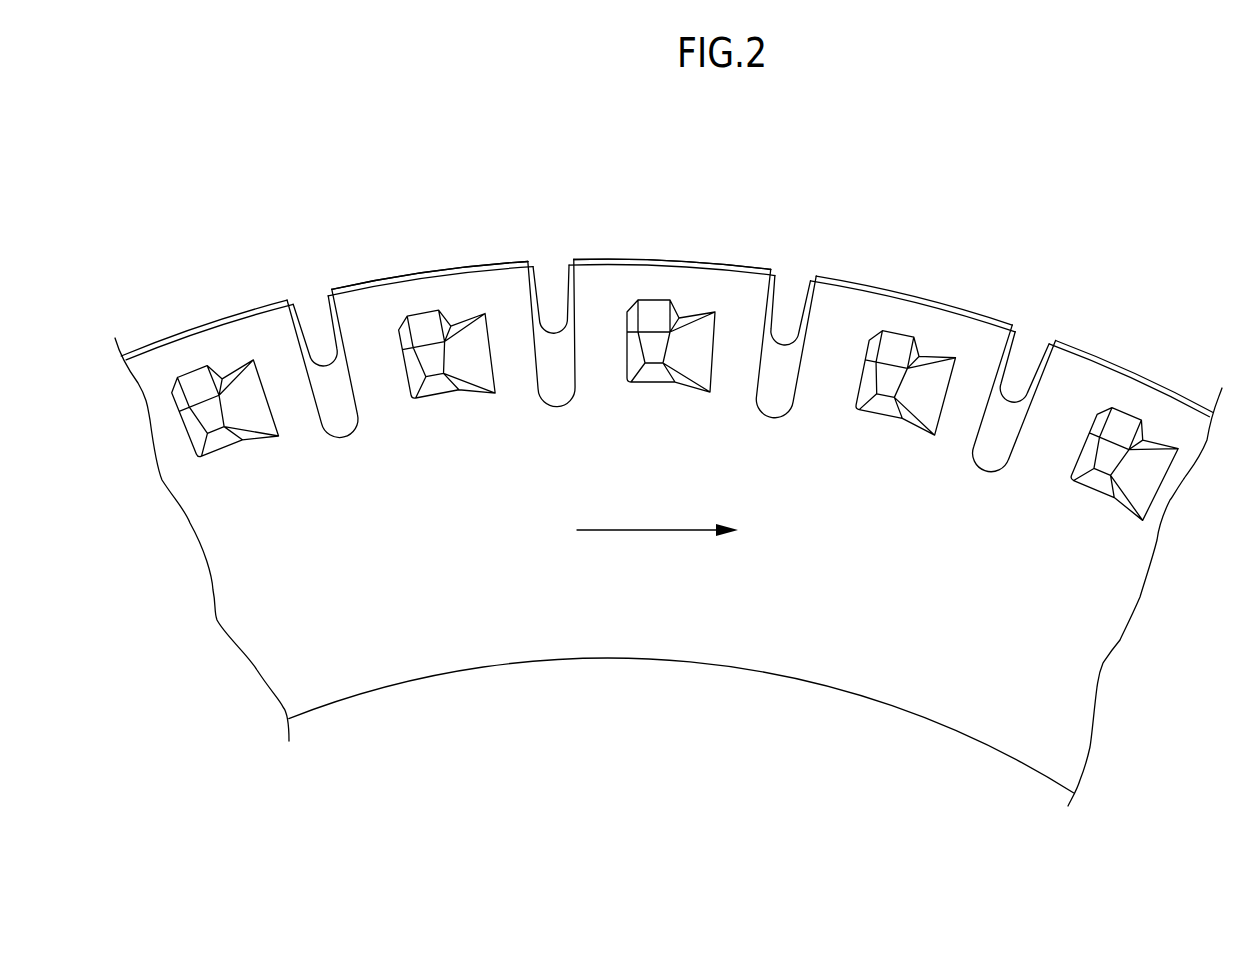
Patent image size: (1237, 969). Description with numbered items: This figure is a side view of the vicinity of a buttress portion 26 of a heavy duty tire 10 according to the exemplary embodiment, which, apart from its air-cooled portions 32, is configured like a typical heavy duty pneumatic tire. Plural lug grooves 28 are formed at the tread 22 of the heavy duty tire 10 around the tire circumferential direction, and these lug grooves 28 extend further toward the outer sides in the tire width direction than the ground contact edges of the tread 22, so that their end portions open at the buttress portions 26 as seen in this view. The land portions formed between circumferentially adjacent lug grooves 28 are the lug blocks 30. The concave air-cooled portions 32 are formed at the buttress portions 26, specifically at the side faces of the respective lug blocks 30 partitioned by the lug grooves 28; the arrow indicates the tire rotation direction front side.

The heavy duty tire 10 is at (921, 207).
The tread 22 is at (960, 299).
The buttress portion 26 is at (240, 517).
The lug groove 28 is at (298, 312).
The lug block 30 is at (453, 268).
The air-cooled portion 32 is at (413, 308).